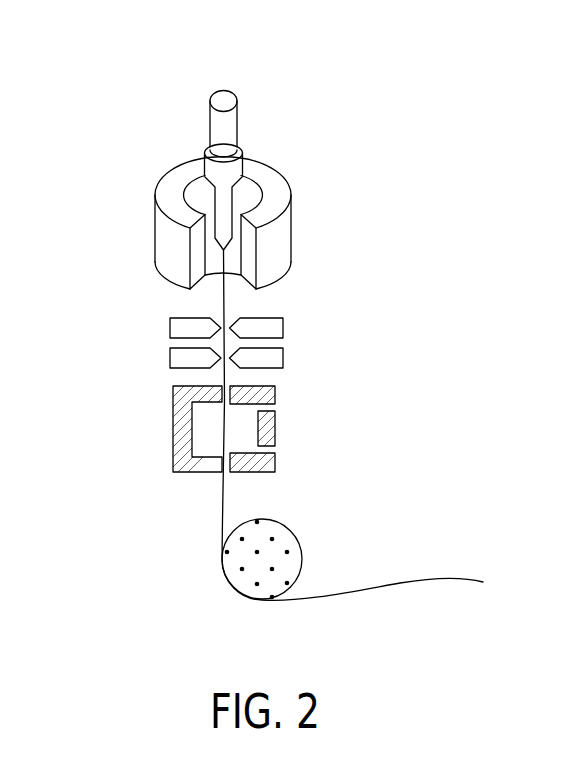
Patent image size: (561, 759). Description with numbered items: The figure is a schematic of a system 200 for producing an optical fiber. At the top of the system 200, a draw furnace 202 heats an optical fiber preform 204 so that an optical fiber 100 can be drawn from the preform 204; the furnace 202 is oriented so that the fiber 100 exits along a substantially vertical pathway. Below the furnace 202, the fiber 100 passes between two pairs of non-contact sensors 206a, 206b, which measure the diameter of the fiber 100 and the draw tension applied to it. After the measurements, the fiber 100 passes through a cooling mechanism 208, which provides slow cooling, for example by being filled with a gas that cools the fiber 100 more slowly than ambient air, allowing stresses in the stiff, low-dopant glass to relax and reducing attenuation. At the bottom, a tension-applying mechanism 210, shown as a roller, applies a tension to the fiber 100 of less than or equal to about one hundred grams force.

The system for producing an optical fiber 200 is at (110, 42).
The draw furnace 202 is at (291, 220).
The optical fiber preform 204 is at (237, 122).
The optical fiber 100 is at (214, 291).
The non-contact sensor 206a is at (283, 323).
The non-contact sensor 206b is at (283, 358).
The cooling mechanism 208 is at (275, 425).
The tension-applying mechanism 210 is at (301, 550).